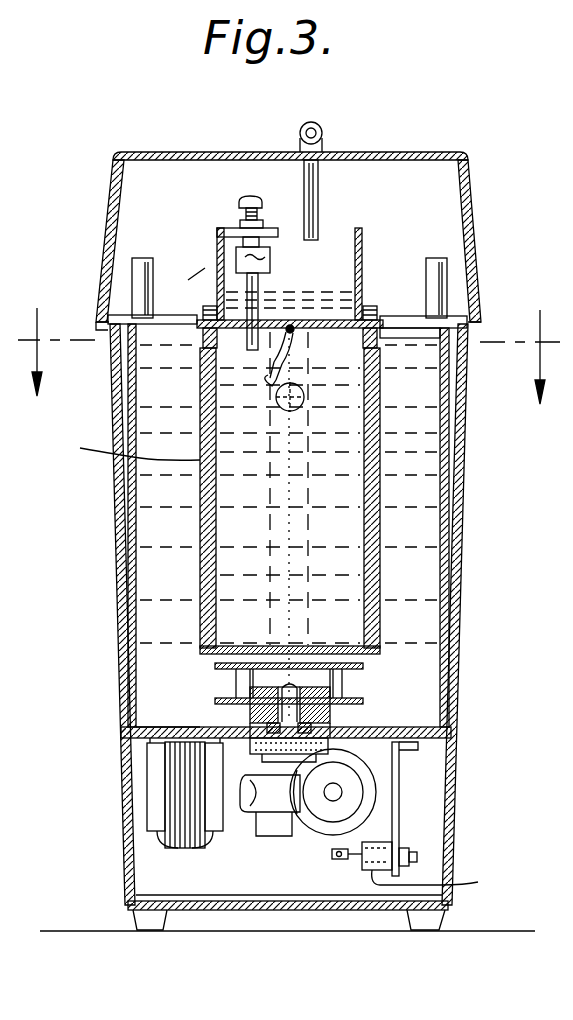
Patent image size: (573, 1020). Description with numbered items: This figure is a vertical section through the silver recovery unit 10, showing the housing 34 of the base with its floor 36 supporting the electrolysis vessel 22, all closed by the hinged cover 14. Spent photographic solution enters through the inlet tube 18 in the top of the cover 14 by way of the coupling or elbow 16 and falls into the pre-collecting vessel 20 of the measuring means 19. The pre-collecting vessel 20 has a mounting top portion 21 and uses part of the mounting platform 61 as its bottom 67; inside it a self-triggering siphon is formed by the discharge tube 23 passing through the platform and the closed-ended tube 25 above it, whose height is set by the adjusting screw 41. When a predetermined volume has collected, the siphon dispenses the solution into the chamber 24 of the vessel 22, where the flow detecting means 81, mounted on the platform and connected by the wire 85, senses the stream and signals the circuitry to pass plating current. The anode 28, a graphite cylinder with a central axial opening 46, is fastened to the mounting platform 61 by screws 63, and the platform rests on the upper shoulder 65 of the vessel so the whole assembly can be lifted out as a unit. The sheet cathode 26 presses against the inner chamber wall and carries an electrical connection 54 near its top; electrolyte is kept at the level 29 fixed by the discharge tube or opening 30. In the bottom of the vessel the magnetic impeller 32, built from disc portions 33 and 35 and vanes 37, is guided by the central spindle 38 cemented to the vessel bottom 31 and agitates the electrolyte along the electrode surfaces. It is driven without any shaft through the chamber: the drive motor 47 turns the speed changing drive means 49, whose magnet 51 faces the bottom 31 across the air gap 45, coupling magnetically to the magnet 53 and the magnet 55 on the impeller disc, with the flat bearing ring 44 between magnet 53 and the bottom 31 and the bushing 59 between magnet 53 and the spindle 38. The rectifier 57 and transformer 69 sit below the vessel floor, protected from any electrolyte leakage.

The silver recovery unit 10 is at (504, 128).
The cover 14 is at (474, 182).
The coupling or elbow 16 is at (298, 120).
The inlet tube 18 is at (316, 170).
The measuring means 19 is at (218, 226).
The pre-collecting vessel 20 is at (365, 240).
The mounting top portion 21 is at (240, 232).
The adjusting screw 41 is at (270, 184).
The bottom of pre-collecting tank 67 is at (463, 236).
The screws 63 is at (450, 262).
The mounting platform 61 is at (412, 314).
The upper shoulder 65 is at (106, 272).
The electrical connection 54 is at (166, 264).
The tube 25 is at (217, 262).
The discharge tube 23 is at (204, 340).
The wire 85 is at (380, 342).
The flow detecting means 81 is at (285, 366).
The discharge tube or opening 30 is at (302, 394).
The chamber 24 is at (128, 386).
The level 29 is at (410, 404).
The anode 28 is at (120, 494).
The electrolysis vessel 22 is at (466, 434).
The central axial opening 46 is at (340, 492).
The cathode 26 is at (466, 548).
The disc portion 33 is at (232, 662).
The centering tube or spindle 38 is at (290, 670).
The vanes 37 is at (218, 680).
The magnetic impeller 32 is at (343, 684).
The disc portion 35 is at (240, 694).
The magnet 55 is at (340, 686).
The bushing 59 is at (240, 712).
The magnet 53 is at (350, 716).
The flat bearing ring 44 is at (136, 724).
The bottom of vessel 31 is at (458, 731).
The magnet 51 is at (247, 755).
The support or floor 36 is at (420, 750).
The transformer 69 is at (167, 794).
The air gap 45 is at (400, 820).
The drive motor 47 is at (376, 792).
The housing 34 is at (126, 834).
The speed changing drive means 49 is at (268, 824).
The rectifier 57 is at (420, 873).